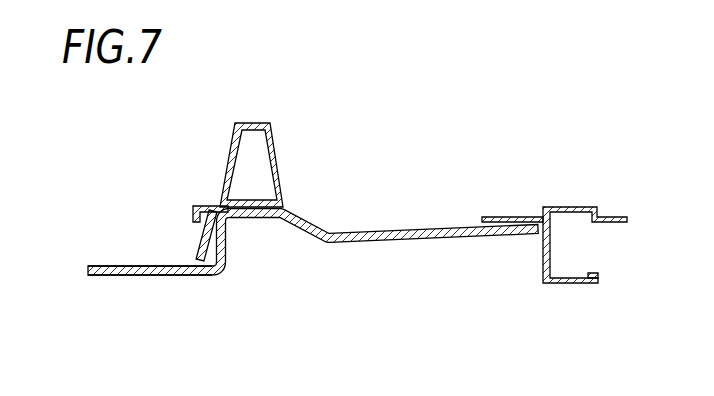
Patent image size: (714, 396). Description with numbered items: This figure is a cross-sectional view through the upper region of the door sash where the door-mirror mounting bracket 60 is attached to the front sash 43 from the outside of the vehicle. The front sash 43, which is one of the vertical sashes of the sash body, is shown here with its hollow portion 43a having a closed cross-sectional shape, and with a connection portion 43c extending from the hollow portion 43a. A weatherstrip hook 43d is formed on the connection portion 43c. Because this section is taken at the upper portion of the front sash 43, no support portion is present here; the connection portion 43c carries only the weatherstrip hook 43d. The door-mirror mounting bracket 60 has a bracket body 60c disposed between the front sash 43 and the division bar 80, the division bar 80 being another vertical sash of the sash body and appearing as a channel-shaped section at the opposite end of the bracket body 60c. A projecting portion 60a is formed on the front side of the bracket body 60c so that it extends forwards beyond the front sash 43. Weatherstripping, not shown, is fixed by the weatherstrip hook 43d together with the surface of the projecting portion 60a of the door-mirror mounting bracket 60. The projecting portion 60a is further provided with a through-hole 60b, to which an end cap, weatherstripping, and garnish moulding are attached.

The front sash 43 is at (135, 100).
The hollow portion 43a is at (266, 151).
The connection portion 43c is at (196, 257).
The weatherstrip hook 43d is at (197, 205).
The door-mirror mounting bracket 60 is at (285, 298).
The projecting portion 60a is at (177, 273).
The through-hole 60b is at (137, 273).
The bracket body 60c is at (307, 227).
The division bar 80 is at (563, 207).